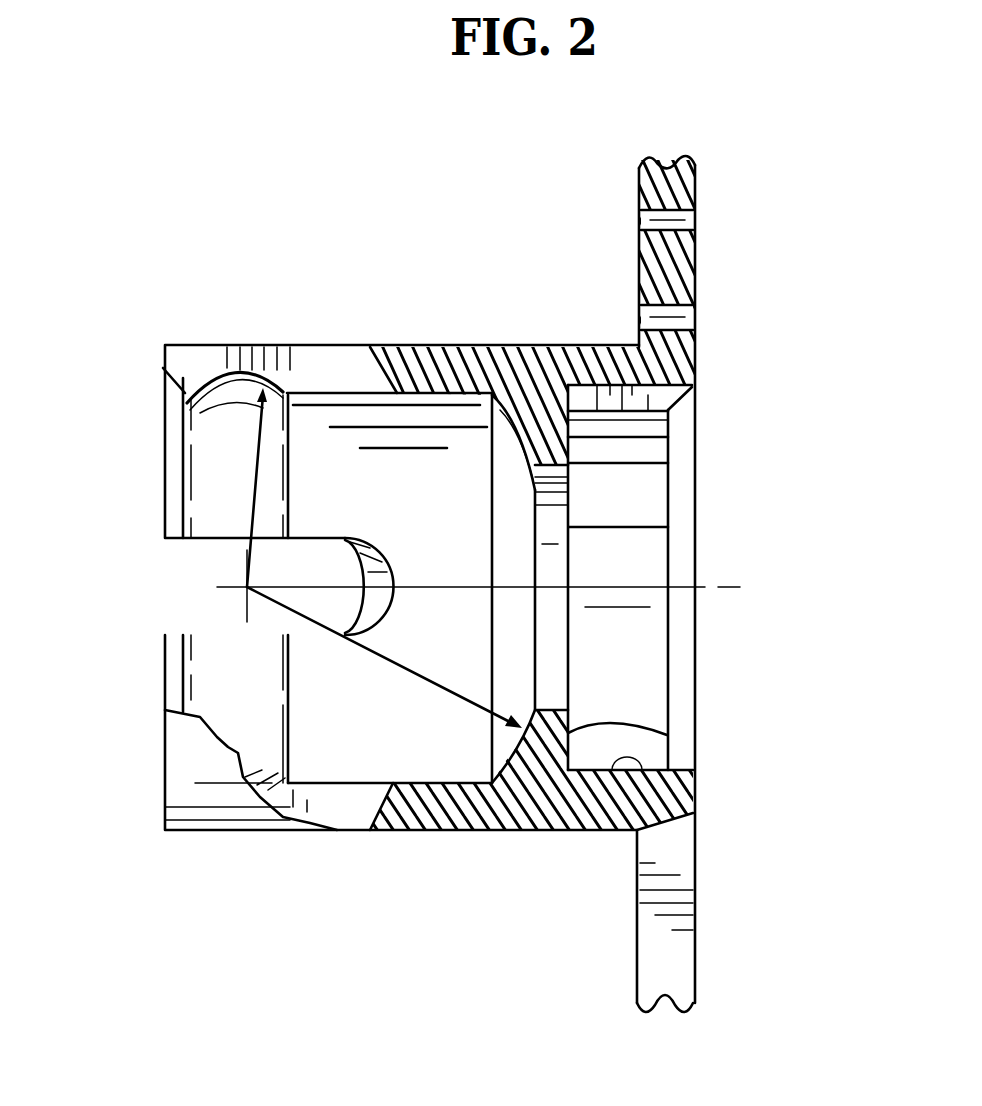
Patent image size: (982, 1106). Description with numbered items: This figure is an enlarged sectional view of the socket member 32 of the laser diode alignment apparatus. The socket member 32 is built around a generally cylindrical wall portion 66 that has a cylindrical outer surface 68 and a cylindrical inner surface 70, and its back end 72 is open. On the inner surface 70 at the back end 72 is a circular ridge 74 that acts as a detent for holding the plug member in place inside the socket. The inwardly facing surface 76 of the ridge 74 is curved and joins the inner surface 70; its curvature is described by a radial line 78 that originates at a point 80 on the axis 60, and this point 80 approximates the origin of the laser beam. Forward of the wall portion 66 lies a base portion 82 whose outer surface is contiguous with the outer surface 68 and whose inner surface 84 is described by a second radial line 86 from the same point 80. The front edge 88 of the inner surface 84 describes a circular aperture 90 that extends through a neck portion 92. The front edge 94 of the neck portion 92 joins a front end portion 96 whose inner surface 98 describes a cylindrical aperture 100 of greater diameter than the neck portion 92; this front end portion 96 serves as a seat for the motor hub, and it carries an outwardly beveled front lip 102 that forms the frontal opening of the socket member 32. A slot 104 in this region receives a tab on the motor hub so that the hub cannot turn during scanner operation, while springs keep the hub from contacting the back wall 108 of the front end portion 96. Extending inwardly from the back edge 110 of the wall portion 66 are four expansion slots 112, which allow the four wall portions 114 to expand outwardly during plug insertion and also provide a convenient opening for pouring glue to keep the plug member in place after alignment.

The socket member 32 is at (236, 180).
The axis 60 is at (452, 587).
The cylindrical wall portion 66 is at (320, 432).
The outer surface 68 is at (405, 345).
The inner surface 70 is at (362, 780).
The back end 72 is at (140, 495).
The circular ridge 74 is at (185, 390).
The inwardly facing surface 76 is at (185, 404).
The radial line 78 is at (227, 490).
The point 80 is at (250, 586).
The base portion 82 is at (507, 466).
The inner surface 84 is at (492, 750).
The radial line 86 is at (403, 667).
The front edge 88 is at (505, 672).
The circular aperture 90 is at (550, 645).
The neck portion 92 is at (548, 523).
The front edge 94 is at (560, 703).
The front end portion 96 is at (636, 503).
The inner surface 98 is at (612, 760).
The cylindrical aperture 100 is at (637, 558).
The front lip 102 is at (680, 667).
The slot 104 is at (668, 410).
The back wall 108 is at (667, 735).
The back edge 110 is at (163, 368).
The expansion slots 112 is at (348, 362).
The wall portions 114 is at (210, 512).